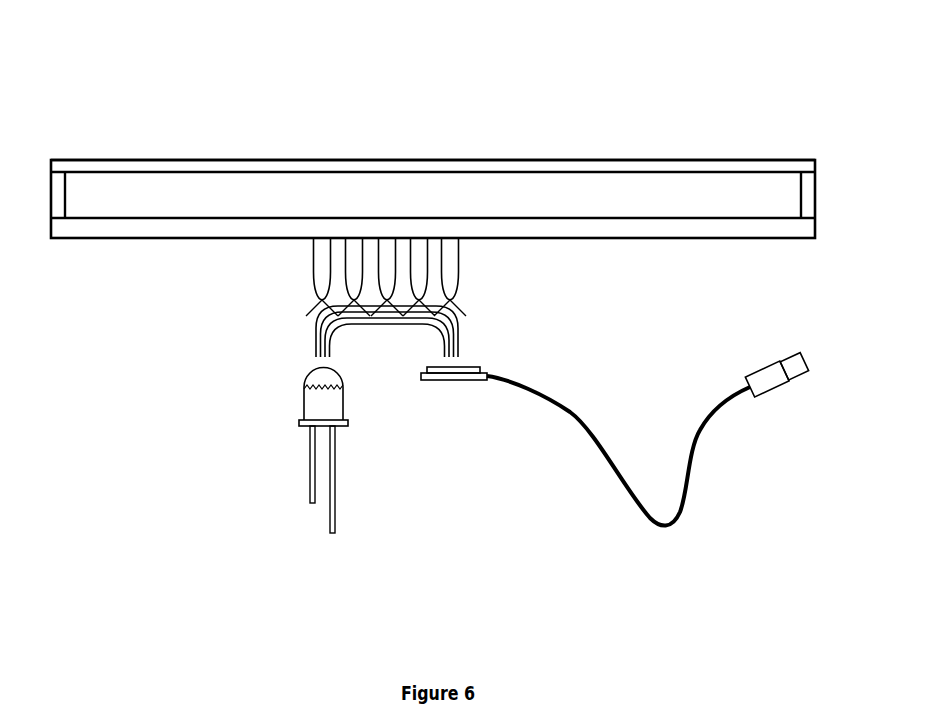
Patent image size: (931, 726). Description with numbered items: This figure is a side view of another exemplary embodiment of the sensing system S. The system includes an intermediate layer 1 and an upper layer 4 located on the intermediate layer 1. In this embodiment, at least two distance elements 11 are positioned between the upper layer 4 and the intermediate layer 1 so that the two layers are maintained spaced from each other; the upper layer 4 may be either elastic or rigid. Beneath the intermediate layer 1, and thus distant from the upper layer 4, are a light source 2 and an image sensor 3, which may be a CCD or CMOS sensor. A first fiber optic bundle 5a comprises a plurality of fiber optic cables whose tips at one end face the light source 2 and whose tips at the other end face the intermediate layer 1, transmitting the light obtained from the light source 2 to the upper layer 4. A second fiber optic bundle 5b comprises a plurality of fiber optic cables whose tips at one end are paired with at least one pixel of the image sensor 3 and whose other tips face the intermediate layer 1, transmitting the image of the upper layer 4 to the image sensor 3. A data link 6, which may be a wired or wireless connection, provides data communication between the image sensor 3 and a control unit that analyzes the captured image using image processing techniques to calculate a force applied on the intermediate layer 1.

The sensing system S is at (185, 100).
The intermediate layer 1 is at (626, 230).
The upper layer 4 is at (662, 170).
The distance element 11 is at (57, 205).
The first fiber optic bundle 5a is at (325, 348).
The second fiber optic bundle 5b is at (458, 345).
The light source 2 is at (318, 410).
The image sensor 3 is at (445, 383).
The data link 6 is at (687, 500).